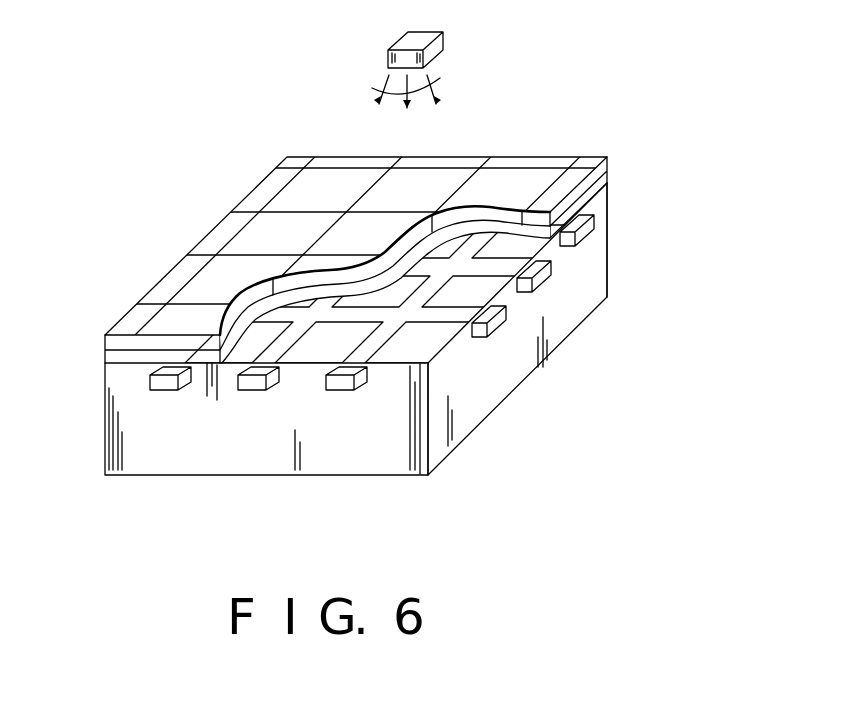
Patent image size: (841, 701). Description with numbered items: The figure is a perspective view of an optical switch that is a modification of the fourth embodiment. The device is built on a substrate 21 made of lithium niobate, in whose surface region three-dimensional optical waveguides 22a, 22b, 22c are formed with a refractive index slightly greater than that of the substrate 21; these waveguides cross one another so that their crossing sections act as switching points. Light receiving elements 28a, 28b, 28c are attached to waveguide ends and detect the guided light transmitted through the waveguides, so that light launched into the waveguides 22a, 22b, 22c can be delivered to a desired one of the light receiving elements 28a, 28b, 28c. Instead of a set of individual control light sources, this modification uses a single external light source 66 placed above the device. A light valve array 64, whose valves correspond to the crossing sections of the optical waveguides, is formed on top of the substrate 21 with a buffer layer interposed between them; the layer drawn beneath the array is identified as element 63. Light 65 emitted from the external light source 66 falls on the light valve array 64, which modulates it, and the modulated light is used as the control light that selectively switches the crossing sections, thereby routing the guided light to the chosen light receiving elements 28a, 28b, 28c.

The substrate 21 is at (187, 467).
The optical waveguide 22a is at (166, 392).
The optical waveguide 22b is at (253, 392).
The optical waveguide 22c is at (343, 392).
The light receiving element 28a is at (503, 332).
The light receiving element 28b is at (550, 275).
The light receiving element 28c is at (592, 225).
The insulating layer 63 is at (114, 352).
The light valve array 64 is at (295, 165).
The light 65 is at (442, 80).
The external light source 66 is at (442, 42).